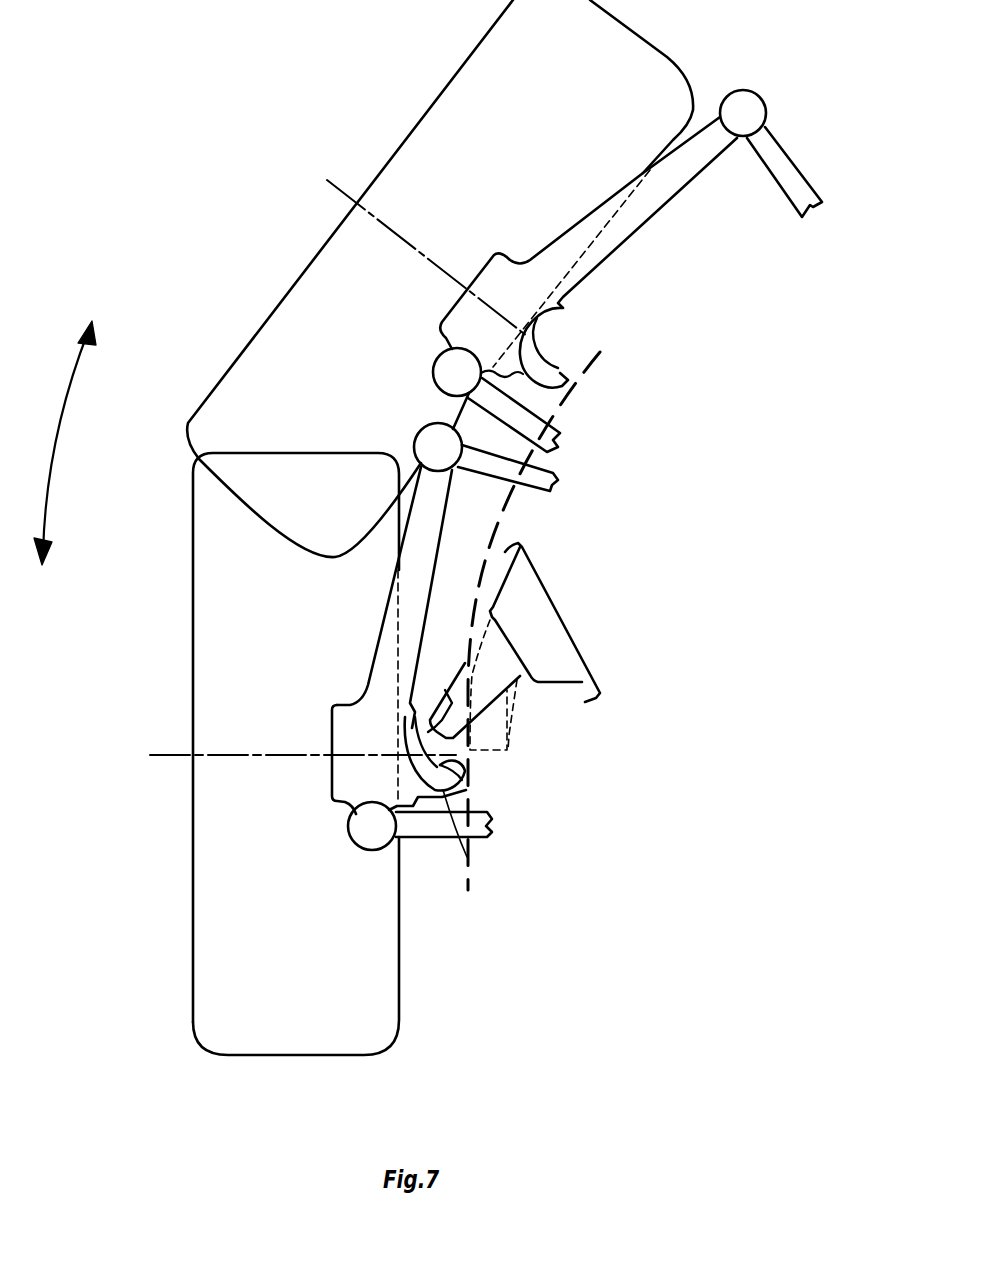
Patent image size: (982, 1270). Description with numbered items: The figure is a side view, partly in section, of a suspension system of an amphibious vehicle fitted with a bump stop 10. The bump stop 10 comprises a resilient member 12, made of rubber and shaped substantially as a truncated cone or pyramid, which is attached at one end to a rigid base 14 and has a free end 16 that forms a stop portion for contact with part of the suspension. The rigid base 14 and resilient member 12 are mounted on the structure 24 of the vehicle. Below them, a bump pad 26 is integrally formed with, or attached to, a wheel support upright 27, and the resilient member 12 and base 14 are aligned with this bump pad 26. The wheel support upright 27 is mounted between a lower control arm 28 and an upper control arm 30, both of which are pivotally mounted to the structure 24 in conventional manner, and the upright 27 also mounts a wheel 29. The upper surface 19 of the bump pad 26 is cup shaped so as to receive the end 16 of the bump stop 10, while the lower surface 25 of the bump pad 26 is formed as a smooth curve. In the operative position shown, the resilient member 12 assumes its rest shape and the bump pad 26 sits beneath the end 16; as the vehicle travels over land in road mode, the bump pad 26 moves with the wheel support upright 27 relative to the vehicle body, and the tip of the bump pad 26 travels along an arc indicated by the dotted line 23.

The bump stop 10 is at (564, 832).
The resilient member 12 is at (485, 690).
The rigid base 14 is at (548, 668).
The free end 16 is at (412, 728).
The upper surface 19 is at (463, 773).
The dotted line 23 is at (558, 407).
The structure 24 is at (553, 633).
The lower surface 25 is at (470, 857).
The bump pad 26 is at (425, 775).
The wheel support upright 27 is at (343, 730).
The lower control arm 28 is at (432, 827).
The wheel 29 is at (222, 948).
The upper control arm 30 is at (533, 480).